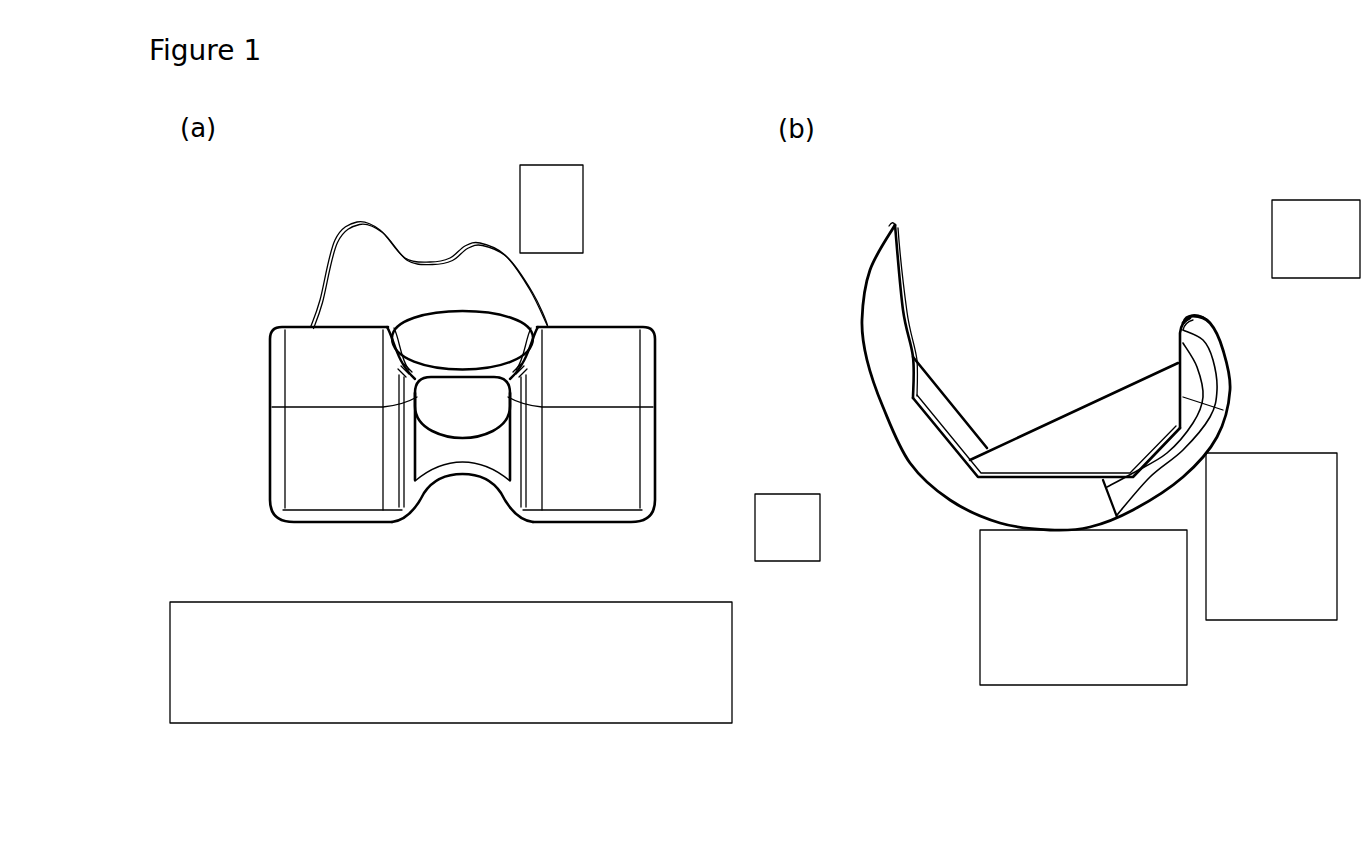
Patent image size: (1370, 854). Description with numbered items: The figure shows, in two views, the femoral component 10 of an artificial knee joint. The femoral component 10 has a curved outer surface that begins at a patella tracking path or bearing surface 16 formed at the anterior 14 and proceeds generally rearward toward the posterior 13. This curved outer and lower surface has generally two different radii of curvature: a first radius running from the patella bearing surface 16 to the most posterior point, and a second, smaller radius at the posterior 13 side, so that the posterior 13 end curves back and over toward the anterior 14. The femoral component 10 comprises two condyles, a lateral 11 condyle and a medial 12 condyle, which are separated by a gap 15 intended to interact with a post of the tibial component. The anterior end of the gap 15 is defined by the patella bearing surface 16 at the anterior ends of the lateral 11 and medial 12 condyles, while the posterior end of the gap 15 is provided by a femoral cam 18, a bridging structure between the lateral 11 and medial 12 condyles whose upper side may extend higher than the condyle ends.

The femoral component 10 is at (680, 530).
The lateral condyle 11 is at (336, 460).
The medial condyle 12 is at (591, 464).
The posterior 13 is at (1213, 329).
The anterior 14 is at (882, 230).
The gap 15 is at (509, 468).
The patella bearing surface 16 is at (888, 430).
The femoral cam 18 is at (457, 348).